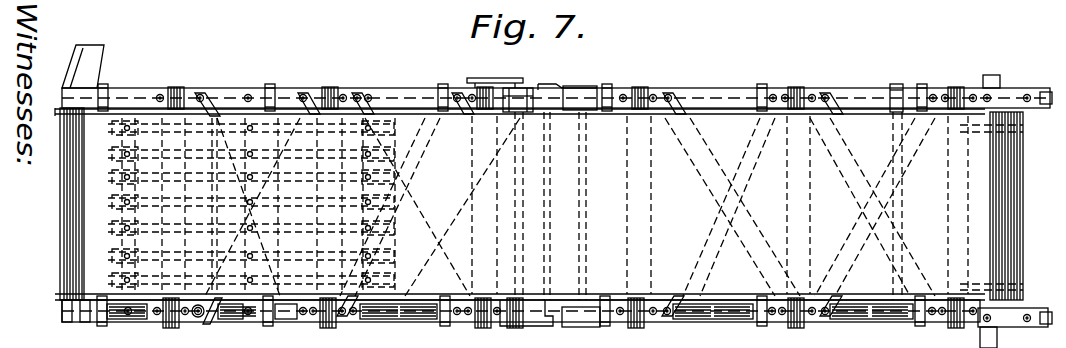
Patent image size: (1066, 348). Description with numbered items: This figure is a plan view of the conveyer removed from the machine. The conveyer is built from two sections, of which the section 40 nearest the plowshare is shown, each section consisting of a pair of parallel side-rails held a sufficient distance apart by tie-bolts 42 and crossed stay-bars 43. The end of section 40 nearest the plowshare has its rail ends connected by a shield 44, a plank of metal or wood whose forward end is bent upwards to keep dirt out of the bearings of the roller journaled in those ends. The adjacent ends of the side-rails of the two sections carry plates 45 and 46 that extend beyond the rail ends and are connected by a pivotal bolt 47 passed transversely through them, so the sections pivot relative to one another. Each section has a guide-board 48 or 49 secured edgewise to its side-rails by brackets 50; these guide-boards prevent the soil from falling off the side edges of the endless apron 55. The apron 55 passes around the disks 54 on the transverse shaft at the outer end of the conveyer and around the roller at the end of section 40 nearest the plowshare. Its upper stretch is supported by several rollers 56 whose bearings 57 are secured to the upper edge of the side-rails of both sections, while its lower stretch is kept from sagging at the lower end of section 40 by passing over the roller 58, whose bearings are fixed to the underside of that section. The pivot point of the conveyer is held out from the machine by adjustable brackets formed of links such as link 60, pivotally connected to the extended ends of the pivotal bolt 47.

The conveyer section 40 is at (286, 322).
The tie-bolts 42 is at (205, 92).
The crossed stay-bars 43 is at (360, 90).
The shield 44 is at (100, 58).
The plate 45 is at (584, 88).
The plate 46 is at (548, 84).
The pivotal bolt 47 is at (550, 200).
The guide-board 48 is at (440, 122).
The guide-board 49 is at (703, 162).
The brackets 50 is at (108, 90).
The disks 54 is at (975, 175).
The endless apron 55 is at (291, 206).
The rollers 56 is at (482, 182).
The bearings 57 is at (172, 328).
The roller 58 is at (62, 310).
The link 60 is at (480, 78).